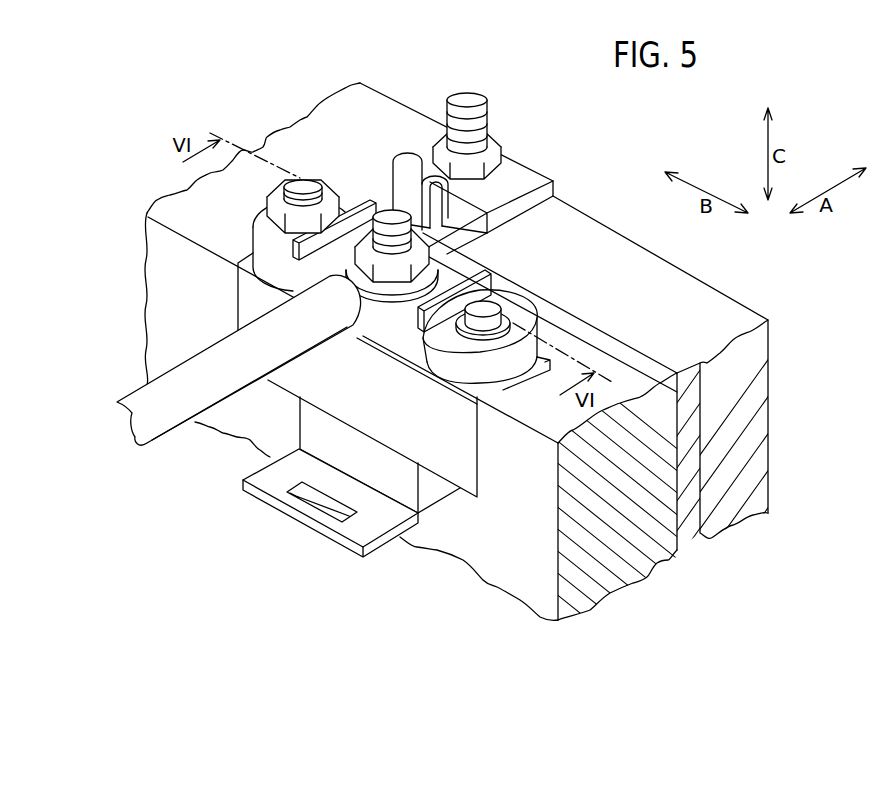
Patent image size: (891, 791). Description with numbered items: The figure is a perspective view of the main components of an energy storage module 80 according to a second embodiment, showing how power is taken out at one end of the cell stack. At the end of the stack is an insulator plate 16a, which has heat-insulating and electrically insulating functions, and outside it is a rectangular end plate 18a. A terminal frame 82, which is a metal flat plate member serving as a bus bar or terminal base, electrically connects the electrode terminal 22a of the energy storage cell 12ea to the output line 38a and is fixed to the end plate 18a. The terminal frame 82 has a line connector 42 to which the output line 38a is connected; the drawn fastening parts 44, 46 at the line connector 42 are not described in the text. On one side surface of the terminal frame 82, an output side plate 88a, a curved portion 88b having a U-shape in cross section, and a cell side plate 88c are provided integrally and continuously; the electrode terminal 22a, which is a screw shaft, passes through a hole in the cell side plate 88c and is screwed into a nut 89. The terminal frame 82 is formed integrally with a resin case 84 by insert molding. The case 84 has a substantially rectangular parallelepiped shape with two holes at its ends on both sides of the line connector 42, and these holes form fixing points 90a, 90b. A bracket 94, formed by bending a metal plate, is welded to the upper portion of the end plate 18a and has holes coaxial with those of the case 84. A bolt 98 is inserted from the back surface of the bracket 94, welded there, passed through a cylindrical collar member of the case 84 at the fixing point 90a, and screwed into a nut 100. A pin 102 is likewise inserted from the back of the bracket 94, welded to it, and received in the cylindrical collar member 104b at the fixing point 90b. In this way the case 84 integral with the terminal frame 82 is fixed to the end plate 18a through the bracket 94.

The energy storage cell 12ea is at (733, 311).
The end plate 18a is at (501, 580).
The insulator plate 16a is at (694, 541).
The case 84 is at (265, 283).
The energy storage module 80 is at (606, 128).
The fixing point 90a is at (245, 254).
The nut 100 is at (267, 214).
The bolt 98 is at (306, 176).
The nut 89 is at (508, 162).
The cell side plate 88c is at (463, 196).
The terminal frame 82 is at (427, 132).
The curved portion 88b is at (403, 163).
The output side plate 88a is at (421, 222).
The electrode terminal 22a is at (470, 104).
The line connector 42 is at (390, 404).
The nut 46 is at (400, 285).
The bolt 44 is at (375, 231).
The output line 38a is at (175, 413).
The pin 102 is at (505, 293).
The fixing point 90b is at (511, 379).
The collar member 104b is at (461, 333).
The bracket 94 is at (459, 506).